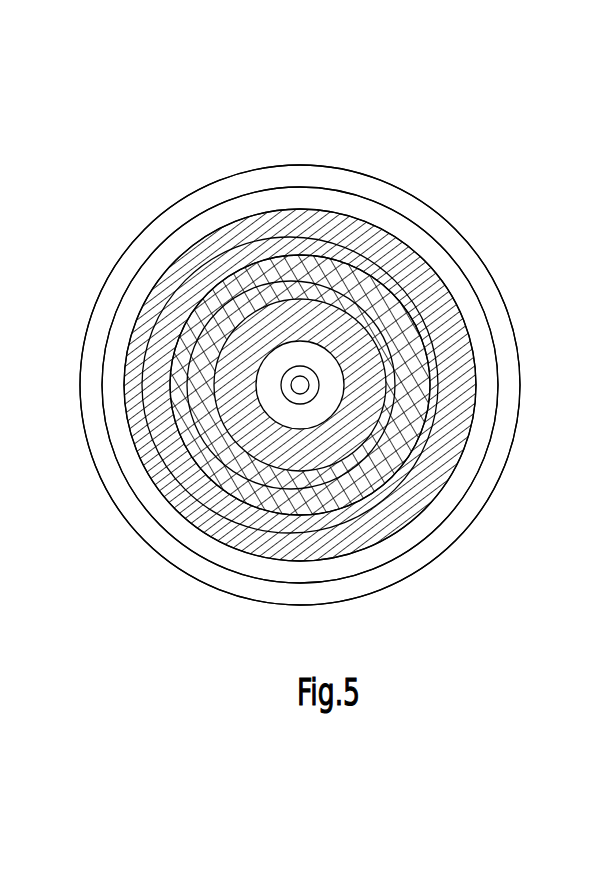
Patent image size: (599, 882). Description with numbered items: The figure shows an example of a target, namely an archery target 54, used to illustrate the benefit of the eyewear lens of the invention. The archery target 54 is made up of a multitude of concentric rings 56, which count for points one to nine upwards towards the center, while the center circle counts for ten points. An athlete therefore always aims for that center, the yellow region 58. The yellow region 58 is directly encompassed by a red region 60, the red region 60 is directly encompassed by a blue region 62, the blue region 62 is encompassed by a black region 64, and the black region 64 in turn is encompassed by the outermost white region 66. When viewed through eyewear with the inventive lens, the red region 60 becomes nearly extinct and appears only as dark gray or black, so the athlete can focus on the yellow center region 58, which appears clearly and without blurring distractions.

The archery target 54 is at (126, 203).
The rings 56 is at (141, 529).
The yellow region 58 is at (286, 427).
The red region 60 is at (343, 392).
The blue region 62 is at (397, 397).
The black region 64 is at (441, 397).
The white region 66 is at (483, 397).